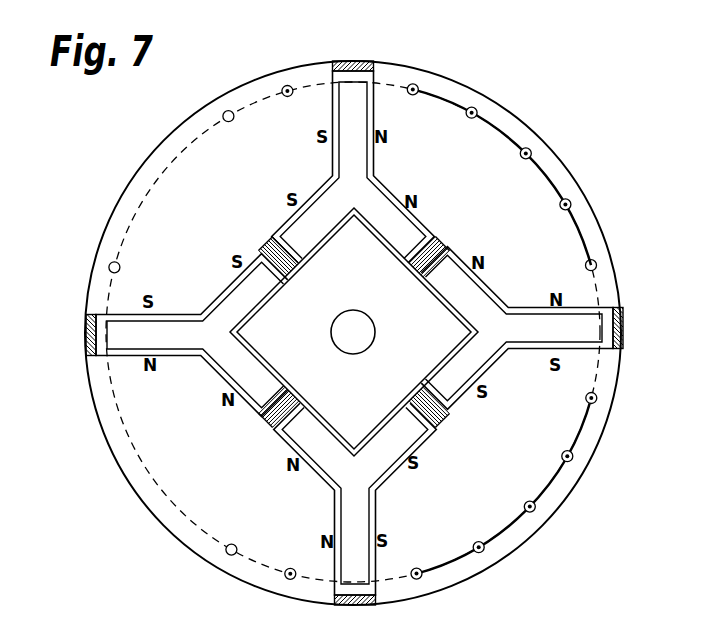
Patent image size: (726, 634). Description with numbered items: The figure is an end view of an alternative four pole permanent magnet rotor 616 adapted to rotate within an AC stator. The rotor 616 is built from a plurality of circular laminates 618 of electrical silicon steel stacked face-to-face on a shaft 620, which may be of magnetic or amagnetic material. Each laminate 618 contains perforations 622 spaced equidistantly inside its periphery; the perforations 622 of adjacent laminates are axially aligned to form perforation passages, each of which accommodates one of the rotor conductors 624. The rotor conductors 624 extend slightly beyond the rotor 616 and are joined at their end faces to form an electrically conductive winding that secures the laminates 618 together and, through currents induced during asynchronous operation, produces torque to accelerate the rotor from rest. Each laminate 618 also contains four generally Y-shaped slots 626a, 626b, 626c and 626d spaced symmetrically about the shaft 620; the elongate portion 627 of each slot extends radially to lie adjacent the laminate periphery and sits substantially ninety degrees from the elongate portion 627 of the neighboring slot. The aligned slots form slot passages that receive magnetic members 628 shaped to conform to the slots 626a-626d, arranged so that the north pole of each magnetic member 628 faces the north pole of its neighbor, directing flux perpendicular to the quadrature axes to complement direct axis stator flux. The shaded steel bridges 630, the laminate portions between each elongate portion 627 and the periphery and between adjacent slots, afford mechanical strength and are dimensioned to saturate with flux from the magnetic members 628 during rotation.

The four pole permanent magnet rotor 616 is at (57, 358).
The circular laminates 618 is at (95, 262).
The shaft 620 is at (352, 310).
The perforations 622 is at (253, 128).
The rotor conductors 624 is at (291, 94).
The Y shaped slot 626a is at (233, 276).
The Y shaped slot 626b is at (375, 161).
The Y shaped slot 626c is at (436, 293).
The Y shaped slot 626d is at (426, 440).
The elongate portion 627 is at (373, 110).
The magnetic members 628 is at (358, 126).
The steel bridges 630 is at (358, 58).